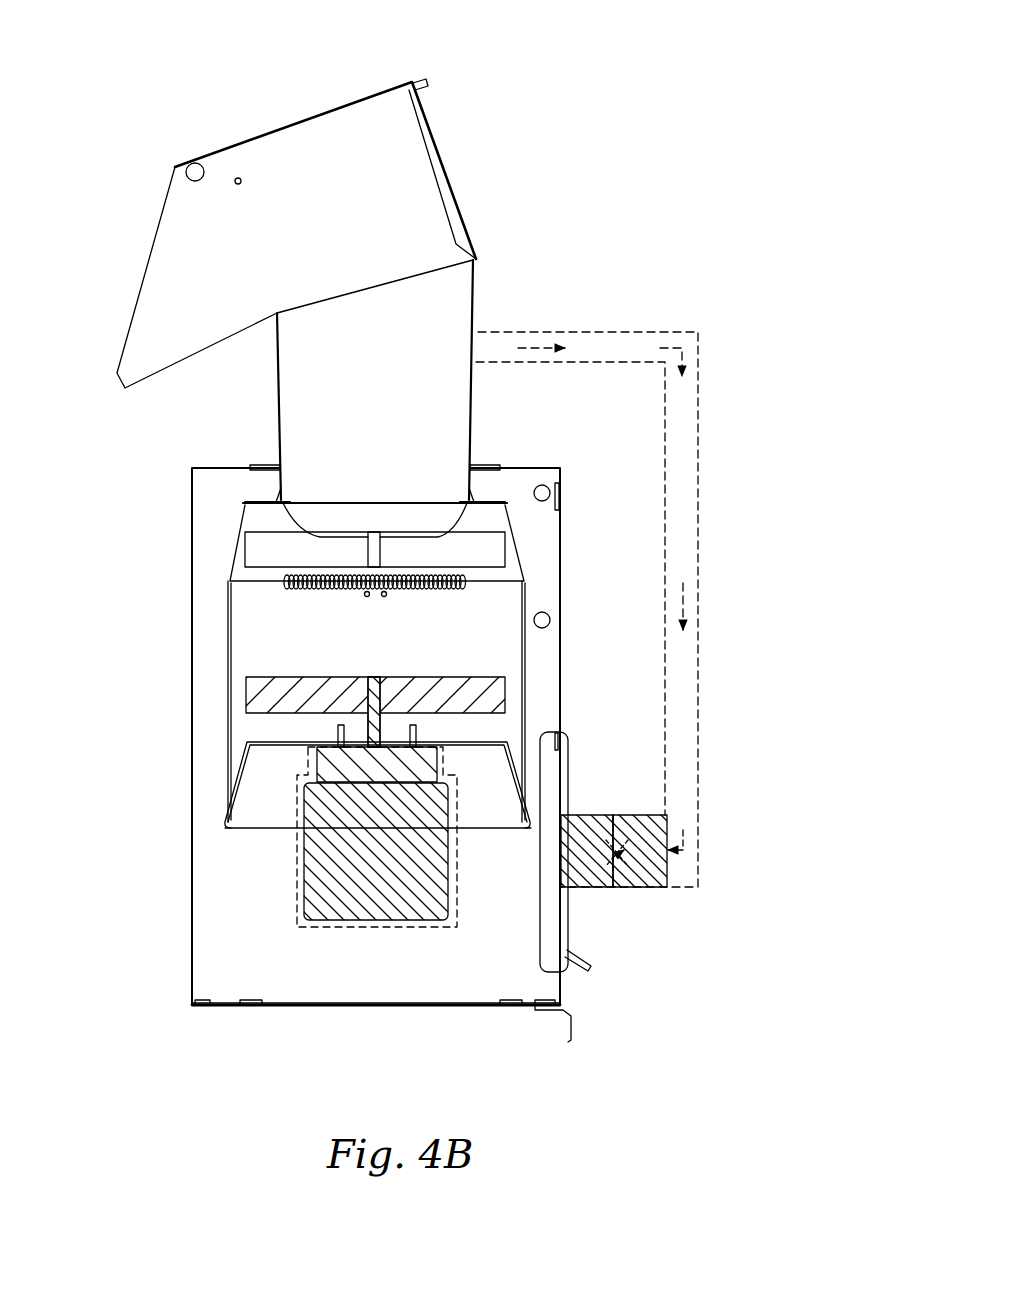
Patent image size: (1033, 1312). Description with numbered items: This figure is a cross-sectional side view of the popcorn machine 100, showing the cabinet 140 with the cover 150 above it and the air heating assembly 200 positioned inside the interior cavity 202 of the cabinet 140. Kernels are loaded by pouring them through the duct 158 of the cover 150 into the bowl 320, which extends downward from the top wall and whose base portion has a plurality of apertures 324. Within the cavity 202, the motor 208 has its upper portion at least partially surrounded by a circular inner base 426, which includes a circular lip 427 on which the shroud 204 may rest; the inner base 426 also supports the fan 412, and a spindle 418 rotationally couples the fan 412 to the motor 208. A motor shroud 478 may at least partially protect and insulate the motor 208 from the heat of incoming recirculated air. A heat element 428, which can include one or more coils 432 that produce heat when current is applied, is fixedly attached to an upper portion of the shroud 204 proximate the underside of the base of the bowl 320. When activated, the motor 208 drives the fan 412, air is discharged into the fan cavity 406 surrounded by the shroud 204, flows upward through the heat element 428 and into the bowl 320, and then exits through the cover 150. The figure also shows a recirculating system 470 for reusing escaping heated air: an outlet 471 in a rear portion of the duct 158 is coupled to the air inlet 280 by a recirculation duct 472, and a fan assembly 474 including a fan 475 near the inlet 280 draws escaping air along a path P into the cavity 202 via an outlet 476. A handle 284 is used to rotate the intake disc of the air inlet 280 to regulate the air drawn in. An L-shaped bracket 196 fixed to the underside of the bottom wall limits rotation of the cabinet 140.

The popcorn machine 100 is at (150, 60).
The cover 150 is at (328, 88).
The duct 158 is at (281, 418).
The cabinet 140 is at (192, 543).
The bowl 320 is at (336, 518).
The apertures 324 is at (417, 536).
The heat element 428 is at (428, 587).
The coils 432 is at (492, 582).
The fan cavity 406 is at (300, 628).
The shroud 204 is at (226, 658).
The fan 412 is at (252, 692).
The spindle 418 is at (272, 717).
The inner base 426 is at (258, 777).
The lip 427 is at (220, 826).
The air heating assembly 200 is at (282, 882).
The motor 208 is at (340, 897).
The motor shroud 478 is at (437, 925).
The cavity 202 is at (398, 973).
The air inlet 280 is at (540, 926).
The handle 284 is at (587, 975).
The bracket 196 is at (572, 1040).
The outlet 476 is at (547, 847).
The fan assembly 474 is at (650, 890).
The fan 475 is at (613, 815).
The recirculation duct 472 is at (648, 332).
The outlet 471 is at (445, 352).
The path P is at (683, 600).
The recirculating system 470 is at (752, 750).